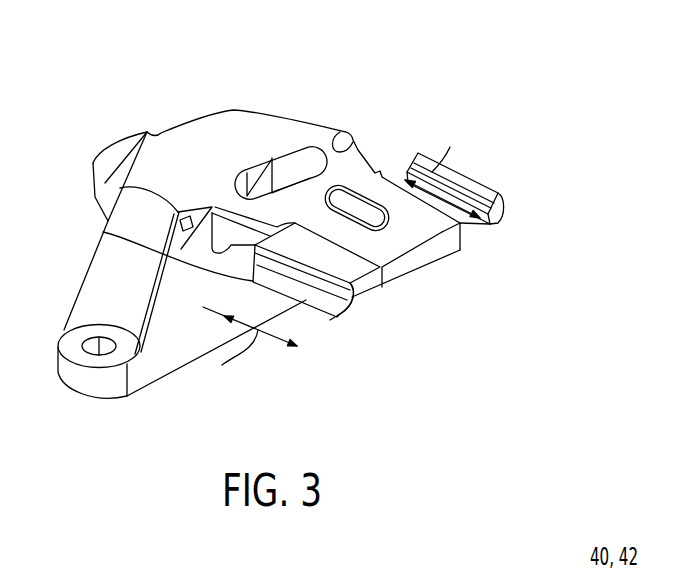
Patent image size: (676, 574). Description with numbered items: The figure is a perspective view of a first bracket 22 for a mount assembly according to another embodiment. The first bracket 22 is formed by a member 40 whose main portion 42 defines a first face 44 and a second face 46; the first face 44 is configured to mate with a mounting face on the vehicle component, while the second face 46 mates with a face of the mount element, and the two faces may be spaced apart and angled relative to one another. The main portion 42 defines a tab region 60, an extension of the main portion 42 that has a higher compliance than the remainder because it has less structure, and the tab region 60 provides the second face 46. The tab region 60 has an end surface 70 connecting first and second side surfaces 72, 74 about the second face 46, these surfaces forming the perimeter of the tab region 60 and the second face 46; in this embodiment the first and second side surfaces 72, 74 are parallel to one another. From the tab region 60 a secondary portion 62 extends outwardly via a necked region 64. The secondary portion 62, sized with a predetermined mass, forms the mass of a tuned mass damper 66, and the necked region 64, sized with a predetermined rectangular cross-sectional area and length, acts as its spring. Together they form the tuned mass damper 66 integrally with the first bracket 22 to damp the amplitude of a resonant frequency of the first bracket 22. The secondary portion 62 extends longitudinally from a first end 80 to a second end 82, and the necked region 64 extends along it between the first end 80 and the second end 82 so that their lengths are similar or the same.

The first bracket 22 is at (100, 117).
The member 40 is at (323, 265).
The main portion 42 is at (205, 140).
The first face 44 is at (100, 398).
The second face 46 is at (353, 181).
The tab region 60 is at (449, 240).
The secondary portion 62 is at (343, 320).
The necked region 64 is at (447, 183).
The tuned mass damper 66 is at (348, 352).
The end surface 70 is at (389, 284).
The first side surface 72 is at (368, 297).
The second side surface 74 is at (488, 228).
The first end 80 is at (103, 232).
The second end 82 is at (338, 322).